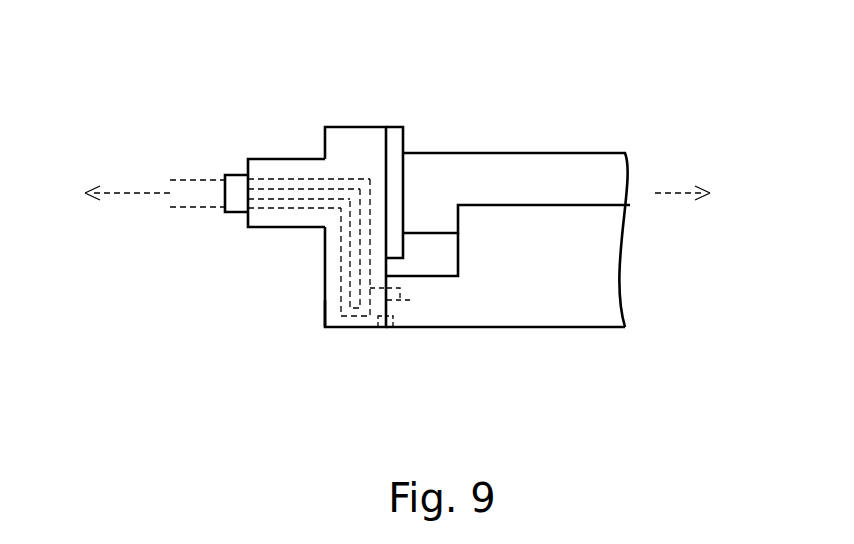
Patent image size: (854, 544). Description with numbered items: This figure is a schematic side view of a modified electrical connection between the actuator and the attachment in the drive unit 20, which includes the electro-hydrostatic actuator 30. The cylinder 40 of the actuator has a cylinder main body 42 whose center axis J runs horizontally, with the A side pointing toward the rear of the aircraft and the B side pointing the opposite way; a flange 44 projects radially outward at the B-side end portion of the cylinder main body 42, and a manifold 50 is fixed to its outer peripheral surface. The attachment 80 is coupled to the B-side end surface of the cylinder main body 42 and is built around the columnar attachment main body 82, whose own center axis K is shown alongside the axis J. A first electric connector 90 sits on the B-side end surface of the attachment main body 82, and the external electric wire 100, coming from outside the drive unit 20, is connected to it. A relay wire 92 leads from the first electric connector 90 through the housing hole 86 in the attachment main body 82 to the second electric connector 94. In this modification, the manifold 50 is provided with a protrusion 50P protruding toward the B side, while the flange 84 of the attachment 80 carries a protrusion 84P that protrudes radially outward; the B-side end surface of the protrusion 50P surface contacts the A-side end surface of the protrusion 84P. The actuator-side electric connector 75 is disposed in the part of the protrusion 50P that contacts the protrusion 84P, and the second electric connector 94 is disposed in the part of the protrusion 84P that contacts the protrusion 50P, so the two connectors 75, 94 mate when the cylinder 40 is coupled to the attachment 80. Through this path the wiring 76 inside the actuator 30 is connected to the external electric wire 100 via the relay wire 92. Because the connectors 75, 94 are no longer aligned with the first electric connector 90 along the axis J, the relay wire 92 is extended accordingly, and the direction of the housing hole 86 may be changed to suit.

The drive unit 20 is at (648, 85).
The electro-hydrostatic actuator 30 is at (573, 112).
The cylinder 40 is at (388, 69).
The cylinder main body 42 is at (467, 163).
The flange 44 is at (393, 127).
The manifold 50 is at (537, 320).
The protrusion 50P is at (437, 300).
The actuator-side electric connector 75 is at (398, 333).
The wiring 76 is at (412, 292).
The attachment 80 is at (360, 69).
The attachment main body 82 is at (267, 159).
The flange 84 is at (350, 127).
The protrusion 84P is at (327, 316).
The housing hole 86 is at (340, 243).
The first electric connector 90 is at (243, 213).
The relay wire 92 is at (345, 278).
The second electric connector 94 is at (372, 333).
The electric wire 100 is at (207, 207).
The A side A is at (695, 194).
The B side B is at (115, 194).
The center axis J is at (128, 193).
The center axis K is at (141, 276).